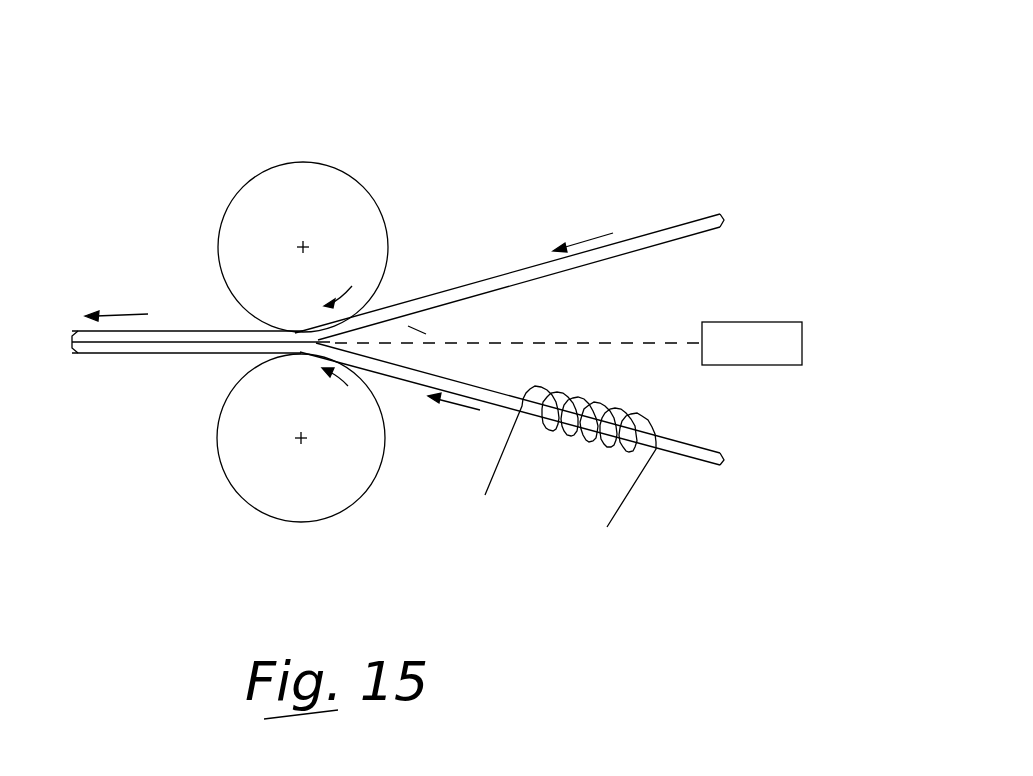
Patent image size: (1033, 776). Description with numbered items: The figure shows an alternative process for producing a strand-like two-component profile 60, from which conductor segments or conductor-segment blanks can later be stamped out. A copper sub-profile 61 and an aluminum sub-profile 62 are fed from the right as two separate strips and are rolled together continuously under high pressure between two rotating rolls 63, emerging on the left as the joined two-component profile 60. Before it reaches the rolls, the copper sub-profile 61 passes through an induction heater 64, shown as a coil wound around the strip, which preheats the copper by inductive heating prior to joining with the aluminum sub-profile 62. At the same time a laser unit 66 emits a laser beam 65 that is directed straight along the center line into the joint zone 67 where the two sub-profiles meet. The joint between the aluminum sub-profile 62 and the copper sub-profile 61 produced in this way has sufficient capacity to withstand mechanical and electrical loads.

The strand-like two-component profile 60 is at (100, 367).
The copper sub-profile 61 is at (697, 472).
The aluminum sub-profile 62 is at (688, 208).
The rotating rolls 63 is at (245, 213).
The induction heater 64 is at (549, 447).
The laser beam 65 is at (598, 343).
The laser unit 66 is at (772, 360).
The joint zone 67 is at (416, 328).